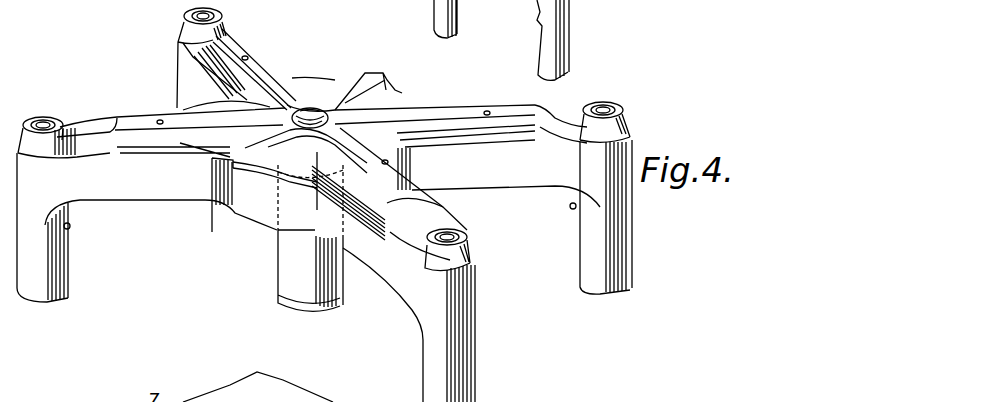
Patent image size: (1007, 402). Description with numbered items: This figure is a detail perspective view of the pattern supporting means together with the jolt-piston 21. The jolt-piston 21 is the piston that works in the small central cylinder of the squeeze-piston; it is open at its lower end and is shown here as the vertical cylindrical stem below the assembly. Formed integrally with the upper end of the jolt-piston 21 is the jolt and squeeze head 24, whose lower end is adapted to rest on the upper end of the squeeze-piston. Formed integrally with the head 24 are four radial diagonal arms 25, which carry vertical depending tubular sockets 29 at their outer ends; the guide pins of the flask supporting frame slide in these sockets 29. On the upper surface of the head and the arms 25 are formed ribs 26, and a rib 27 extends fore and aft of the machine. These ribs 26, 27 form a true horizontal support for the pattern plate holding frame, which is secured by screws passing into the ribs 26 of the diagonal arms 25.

The jolt-piston 21 is at (287, 268).
The jolt and squeeze head 24 is at (242, 190).
The radial diagonal arms 25 is at (262, 55).
The ribs 26 is at (283, 84).
The rib 27 is at (363, 72).
The tubular sockets 29 is at (54, 264).